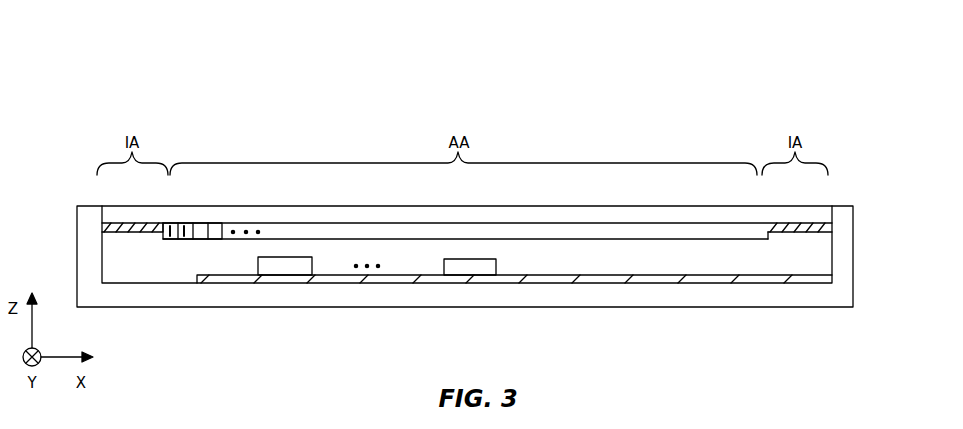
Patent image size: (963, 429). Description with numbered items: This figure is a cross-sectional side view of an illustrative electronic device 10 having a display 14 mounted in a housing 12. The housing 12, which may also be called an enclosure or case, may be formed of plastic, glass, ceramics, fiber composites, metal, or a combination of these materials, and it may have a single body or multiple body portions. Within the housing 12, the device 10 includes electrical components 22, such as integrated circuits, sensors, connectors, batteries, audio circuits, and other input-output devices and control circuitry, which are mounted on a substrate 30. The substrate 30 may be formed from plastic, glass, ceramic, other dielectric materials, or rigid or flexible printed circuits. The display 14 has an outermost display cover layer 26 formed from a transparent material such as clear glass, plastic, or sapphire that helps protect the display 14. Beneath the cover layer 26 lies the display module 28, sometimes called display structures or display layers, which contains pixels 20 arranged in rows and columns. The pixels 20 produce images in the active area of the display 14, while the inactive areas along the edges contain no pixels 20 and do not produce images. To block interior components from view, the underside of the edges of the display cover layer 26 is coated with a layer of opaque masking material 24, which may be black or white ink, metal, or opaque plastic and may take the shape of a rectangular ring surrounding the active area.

The electronic device 10 is at (880, 205).
The housing 12 is at (773, 300).
The display 14 is at (652, 81).
The pixels 20 is at (170, 240).
The electrical components 22 is at (444, 262).
The opaque masking material 24 is at (125, 233).
The display cover layer 26 is at (397, 215).
The display module 28 is at (450, 232).
The substrate 30 is at (197, 276).